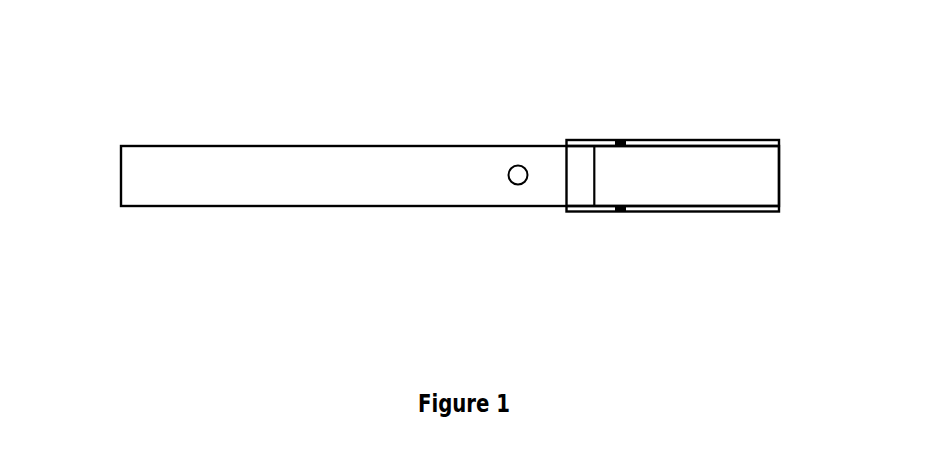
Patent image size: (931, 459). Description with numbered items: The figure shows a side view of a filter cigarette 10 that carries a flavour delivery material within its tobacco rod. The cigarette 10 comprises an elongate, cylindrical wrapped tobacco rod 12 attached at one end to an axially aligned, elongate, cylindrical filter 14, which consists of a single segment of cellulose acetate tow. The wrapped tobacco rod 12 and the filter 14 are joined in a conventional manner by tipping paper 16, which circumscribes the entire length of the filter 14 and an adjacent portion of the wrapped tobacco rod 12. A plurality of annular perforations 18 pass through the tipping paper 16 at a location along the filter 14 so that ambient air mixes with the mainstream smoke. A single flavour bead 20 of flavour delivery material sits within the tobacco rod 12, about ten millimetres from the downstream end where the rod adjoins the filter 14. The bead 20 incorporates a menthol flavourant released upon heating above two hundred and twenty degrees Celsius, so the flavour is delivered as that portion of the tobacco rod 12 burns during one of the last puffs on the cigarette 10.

The cigarette 10 is at (174, 109).
The wrapped tobacco rod 12 is at (679, 173).
The filter 14 is at (281, 183).
The tipping paper 16 is at (700, 212).
The annular perforations 18 is at (617, 210).
The flavour bead 20 is at (515, 167).